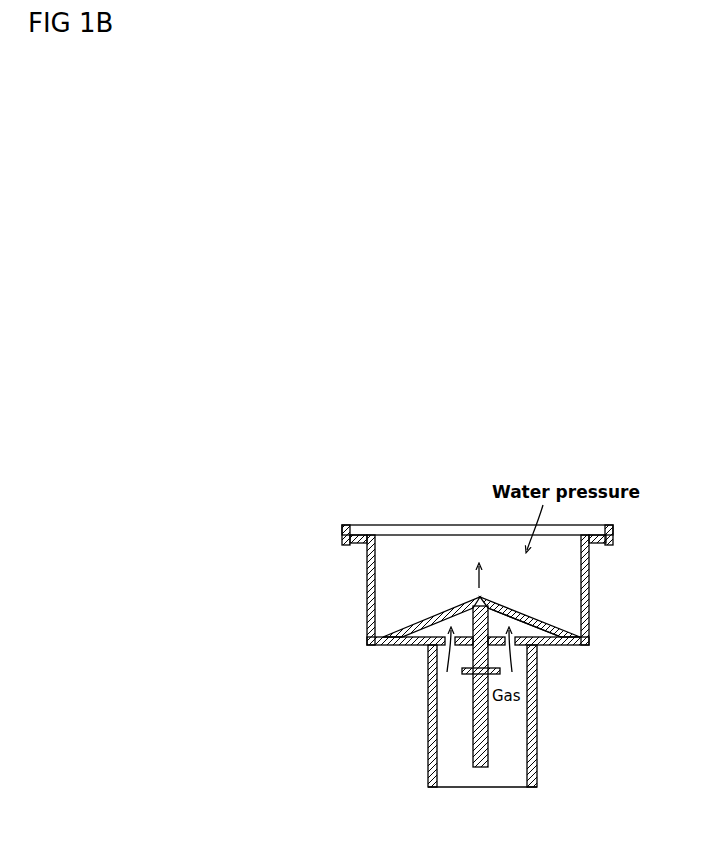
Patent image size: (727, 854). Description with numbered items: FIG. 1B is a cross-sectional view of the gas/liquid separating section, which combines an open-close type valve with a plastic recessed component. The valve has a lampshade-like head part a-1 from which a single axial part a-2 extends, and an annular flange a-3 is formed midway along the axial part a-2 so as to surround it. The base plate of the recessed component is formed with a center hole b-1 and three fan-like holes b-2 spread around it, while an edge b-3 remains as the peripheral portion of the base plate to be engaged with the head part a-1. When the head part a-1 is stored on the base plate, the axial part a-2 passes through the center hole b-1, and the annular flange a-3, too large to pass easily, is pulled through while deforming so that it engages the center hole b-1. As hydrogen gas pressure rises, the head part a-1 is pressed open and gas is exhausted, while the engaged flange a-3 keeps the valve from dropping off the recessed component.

The lampshade-like head part a-1 is at (444, 611).
The axial part a-2 is at (475, 740).
The annular flange a-3 is at (462, 672).
The center hole b-1 is at (493, 630).
The fan-like hole b-2 is at (519, 645).
The edge b-3 is at (548, 619).